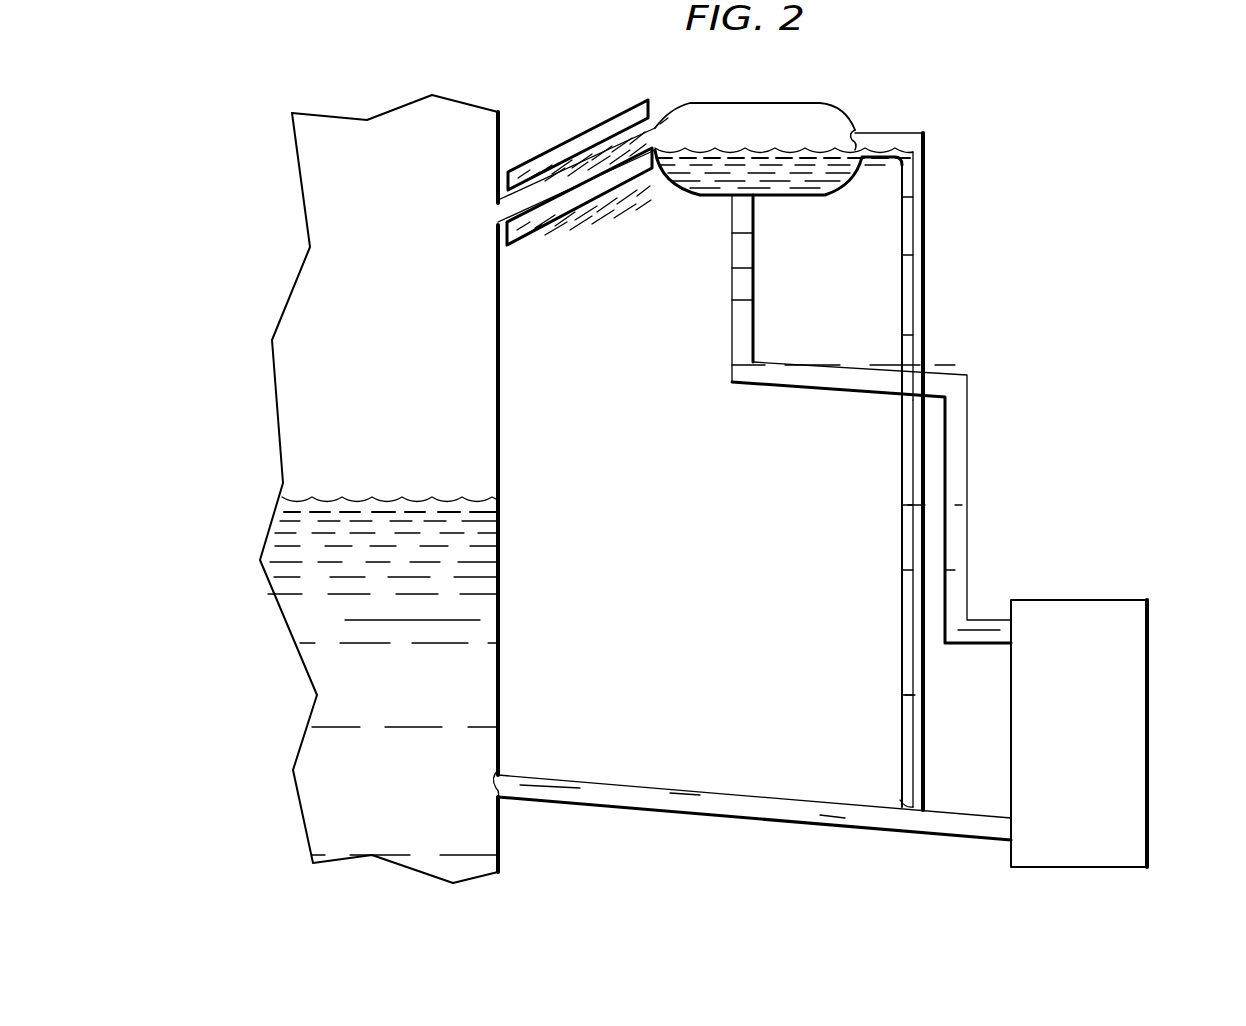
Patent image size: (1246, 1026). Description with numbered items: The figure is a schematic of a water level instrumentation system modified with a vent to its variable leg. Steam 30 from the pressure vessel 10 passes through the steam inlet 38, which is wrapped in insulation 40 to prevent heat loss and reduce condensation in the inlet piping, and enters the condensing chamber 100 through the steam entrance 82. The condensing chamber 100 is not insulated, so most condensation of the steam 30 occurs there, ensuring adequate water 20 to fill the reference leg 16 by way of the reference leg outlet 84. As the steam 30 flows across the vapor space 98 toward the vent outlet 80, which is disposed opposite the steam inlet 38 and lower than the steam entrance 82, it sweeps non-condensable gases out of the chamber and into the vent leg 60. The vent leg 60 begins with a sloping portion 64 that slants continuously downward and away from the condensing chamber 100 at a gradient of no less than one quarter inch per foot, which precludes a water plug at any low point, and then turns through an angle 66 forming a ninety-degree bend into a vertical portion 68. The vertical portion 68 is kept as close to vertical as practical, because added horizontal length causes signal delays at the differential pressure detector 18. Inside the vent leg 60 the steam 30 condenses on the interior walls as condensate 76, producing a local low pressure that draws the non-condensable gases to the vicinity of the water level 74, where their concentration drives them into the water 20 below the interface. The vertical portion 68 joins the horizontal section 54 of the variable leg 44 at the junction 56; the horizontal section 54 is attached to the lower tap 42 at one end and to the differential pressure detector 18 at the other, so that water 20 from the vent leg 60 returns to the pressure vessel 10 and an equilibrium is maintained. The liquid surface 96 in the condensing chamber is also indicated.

The pressure vessel 10 is at (263, 461).
The reference leg 16 is at (782, 364).
The differential pressure detector 18 is at (1148, 687).
The water 20 is at (300, 622).
The steam 30 is at (402, 364).
The steam inlet 38 is at (552, 175).
The insulation 40 is at (572, 222).
The lower tap 42 is at (500, 770).
The variable leg 44 is at (667, 760).
The horizontal section 54 is at (722, 812).
The junction 56 is at (900, 805).
The vent leg 60 is at (1017, 191).
The sloping portion 64 is at (905, 133).
The angle 66 is at (926, 133).
The vertical portion 68 is at (925, 320).
The water level 74 is at (907, 442).
The condensate 76 is at (905, 258).
The vent outlet 80 is at (870, 118).
The steam entrance 82 is at (655, 133).
The reference leg outlet 84 is at (738, 198).
The liquid surface 96 is at (812, 152).
The vapor space 98 is at (787, 115).
The condensing chamber 100 is at (748, 102).